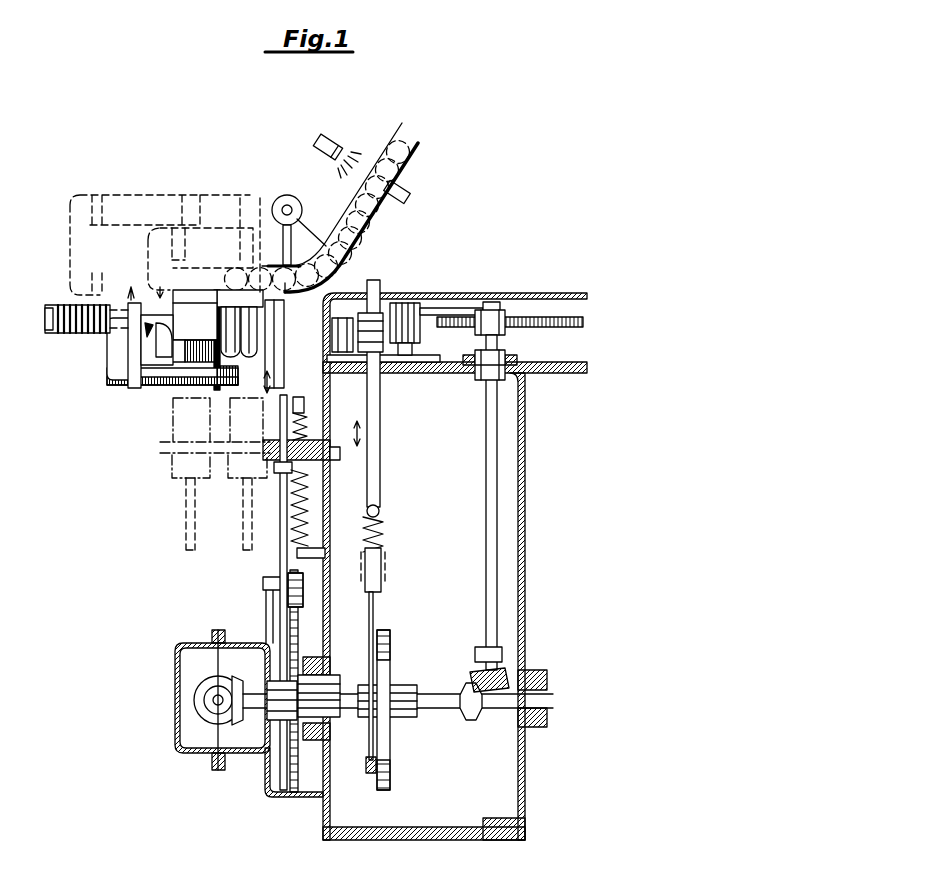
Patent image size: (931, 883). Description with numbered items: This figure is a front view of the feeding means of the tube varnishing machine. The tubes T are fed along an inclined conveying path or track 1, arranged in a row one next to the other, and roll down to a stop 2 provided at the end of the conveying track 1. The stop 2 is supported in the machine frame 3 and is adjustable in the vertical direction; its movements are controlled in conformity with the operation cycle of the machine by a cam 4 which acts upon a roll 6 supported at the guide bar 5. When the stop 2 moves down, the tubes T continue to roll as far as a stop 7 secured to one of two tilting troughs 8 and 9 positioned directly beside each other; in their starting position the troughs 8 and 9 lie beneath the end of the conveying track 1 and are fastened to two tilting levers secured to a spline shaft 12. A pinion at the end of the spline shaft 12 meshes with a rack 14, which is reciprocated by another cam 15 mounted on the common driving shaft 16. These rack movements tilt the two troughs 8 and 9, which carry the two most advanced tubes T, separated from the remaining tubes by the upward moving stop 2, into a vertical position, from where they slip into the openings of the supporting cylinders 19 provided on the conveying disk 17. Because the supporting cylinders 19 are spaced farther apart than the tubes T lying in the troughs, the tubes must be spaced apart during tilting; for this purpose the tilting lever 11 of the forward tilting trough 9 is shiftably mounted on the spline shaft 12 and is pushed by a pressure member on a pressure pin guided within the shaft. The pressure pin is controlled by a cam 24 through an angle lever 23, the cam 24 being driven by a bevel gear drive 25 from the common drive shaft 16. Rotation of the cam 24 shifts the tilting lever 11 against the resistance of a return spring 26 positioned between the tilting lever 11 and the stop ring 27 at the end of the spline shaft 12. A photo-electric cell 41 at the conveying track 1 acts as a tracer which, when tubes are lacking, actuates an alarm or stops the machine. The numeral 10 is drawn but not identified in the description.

The inclined conveying track 1 is at (418, 146).
The stop 2 is at (284, 297).
The machine frame 3 is at (332, 507).
The cam 4 is at (291, 757).
The guide bar 5 is at (280, 553).
The roll 6 is at (293, 583).
The stop 7 is at (213, 303).
The tilting trough 8 is at (260, 200).
The forward tilting trough 9 is at (200, 227).
The clamping jaw 10 is at (212, 233).
The tilting lever 11 is at (98, 193).
The spline shaft 12 is at (92, 335).
The rack 14 is at (373, 452).
The cam 15 is at (384, 677).
The common driving shaft 16 is at (429, 694).
The conveying disk 17 is at (162, 455).
The supporting cylinders 19 is at (175, 480).
The angle lever 23 is at (433, 306).
The cam 24 is at (521, 325).
The bevel gear drive 25 is at (501, 680).
The return spring 26 is at (62, 300).
The stop ring 27 is at (53, 334).
The photo-electric cell 41 is at (408, 186).
The tubes T is at (367, 238).